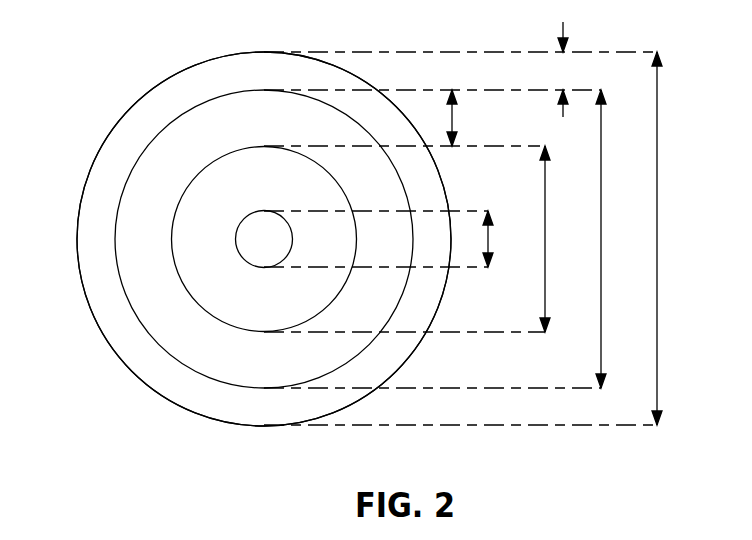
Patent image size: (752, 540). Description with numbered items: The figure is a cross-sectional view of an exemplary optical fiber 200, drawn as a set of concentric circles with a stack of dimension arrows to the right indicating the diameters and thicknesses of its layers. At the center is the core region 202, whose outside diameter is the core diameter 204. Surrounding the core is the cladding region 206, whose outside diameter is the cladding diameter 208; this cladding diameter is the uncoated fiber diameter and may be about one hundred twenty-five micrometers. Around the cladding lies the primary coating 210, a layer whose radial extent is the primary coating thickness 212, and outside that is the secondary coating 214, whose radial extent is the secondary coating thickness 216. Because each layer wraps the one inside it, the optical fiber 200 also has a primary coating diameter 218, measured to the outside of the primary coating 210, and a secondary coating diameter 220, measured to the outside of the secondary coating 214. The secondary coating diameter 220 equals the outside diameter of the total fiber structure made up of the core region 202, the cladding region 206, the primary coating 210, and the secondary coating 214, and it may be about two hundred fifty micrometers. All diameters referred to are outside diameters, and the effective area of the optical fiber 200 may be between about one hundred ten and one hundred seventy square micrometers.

The optical fiber 200 is at (106, 82).
The core region 202 is at (285, 250).
The core diameter 204 is at (490, 242).
The cladding region 206 is at (287, 194).
The cladding diameter 208 is at (546, 258).
The primary coating 210 is at (287, 130).
The primary coating thickness 212 is at (454, 118).
The secondary coating 214 is at (287, 84).
The secondary coating thickness 216 is at (564, 69).
The primary coating diameter 218 is at (602, 210).
The secondary coating diameter 220 is at (658, 240).